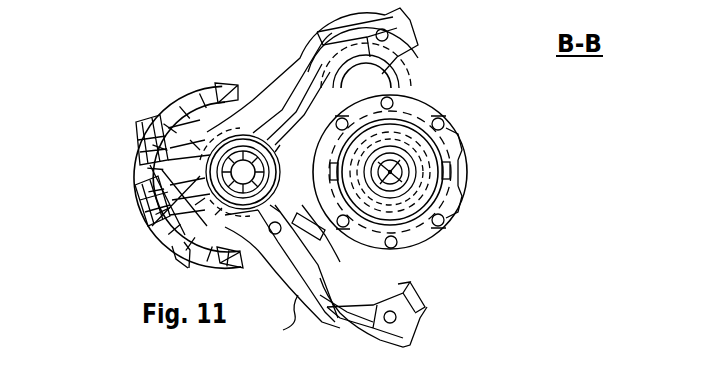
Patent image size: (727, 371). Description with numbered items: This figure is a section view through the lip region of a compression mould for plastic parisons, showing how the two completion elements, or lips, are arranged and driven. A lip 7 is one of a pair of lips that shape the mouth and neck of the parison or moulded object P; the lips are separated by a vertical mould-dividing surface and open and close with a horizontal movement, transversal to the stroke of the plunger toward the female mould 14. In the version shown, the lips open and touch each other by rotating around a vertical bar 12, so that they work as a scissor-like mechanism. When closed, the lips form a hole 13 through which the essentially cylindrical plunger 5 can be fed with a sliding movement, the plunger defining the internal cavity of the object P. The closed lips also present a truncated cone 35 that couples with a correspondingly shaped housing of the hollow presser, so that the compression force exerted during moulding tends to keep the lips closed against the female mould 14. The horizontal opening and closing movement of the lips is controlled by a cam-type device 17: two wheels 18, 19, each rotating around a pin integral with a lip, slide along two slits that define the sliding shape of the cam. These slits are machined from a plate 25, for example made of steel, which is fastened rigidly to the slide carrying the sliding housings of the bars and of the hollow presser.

The plunger 5 is at (447, 130).
The completion element (lip) 7 is at (308, 63).
The vertical bar 12 is at (165, 236).
The hole 13 is at (360, 84).
The female mould 14 is at (455, 157).
The cam-type device 17 is at (175, 106).
The wheel 18 is at (150, 126).
The wheel 19 is at (135, 193).
The plate 25 is at (210, 88).
The truncated cone 35 is at (403, 34).
The parison or moulded object P is at (463, 210).